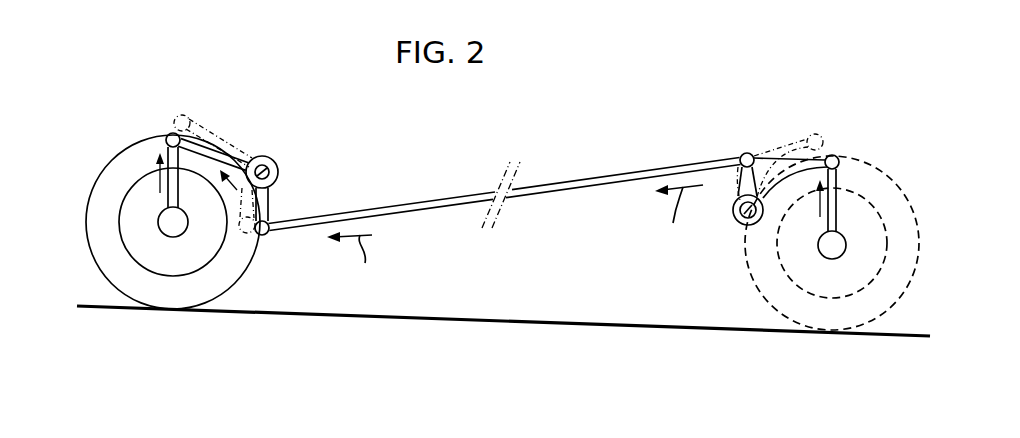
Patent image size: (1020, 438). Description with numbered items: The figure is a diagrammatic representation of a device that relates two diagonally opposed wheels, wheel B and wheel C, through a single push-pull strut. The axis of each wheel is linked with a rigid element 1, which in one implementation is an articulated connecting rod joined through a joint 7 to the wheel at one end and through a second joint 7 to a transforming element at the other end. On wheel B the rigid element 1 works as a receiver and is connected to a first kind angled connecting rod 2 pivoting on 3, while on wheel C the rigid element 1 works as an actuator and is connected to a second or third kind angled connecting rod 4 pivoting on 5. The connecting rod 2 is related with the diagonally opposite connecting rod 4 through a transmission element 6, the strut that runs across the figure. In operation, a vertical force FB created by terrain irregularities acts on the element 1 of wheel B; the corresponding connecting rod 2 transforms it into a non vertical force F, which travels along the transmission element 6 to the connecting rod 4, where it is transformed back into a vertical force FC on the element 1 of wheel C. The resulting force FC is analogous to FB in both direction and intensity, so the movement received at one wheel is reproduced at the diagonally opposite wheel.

The rigid element 1 is at (167, 200).
The first kind connecting rod 2 is at (228, 157).
The pivot 3 is at (278, 165).
The second or third connecting rod 4 is at (768, 167).
The pivot 5 is at (742, 218).
The transmission element 6 is at (472, 195).
The joint 7 is at (262, 235).
The wheel B is at (150, 148).
The wheel C is at (853, 177).
The vertical force FB is at (155, 175).
The vertical force FC is at (847, 197).
The non vertical force F is at (515, 242).